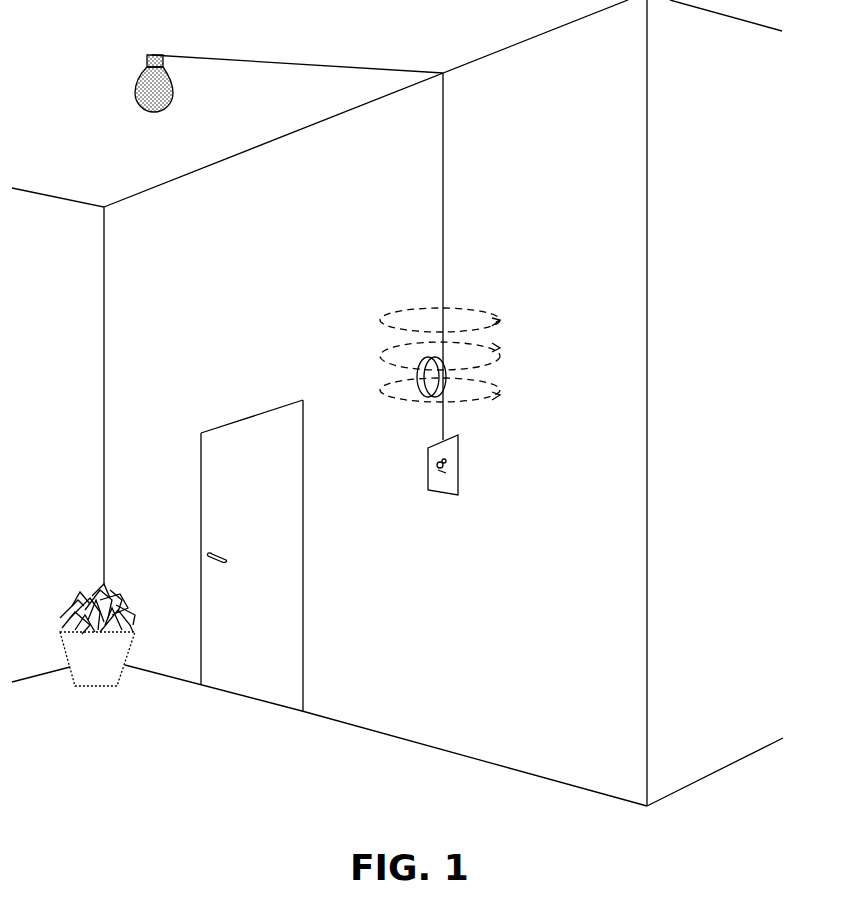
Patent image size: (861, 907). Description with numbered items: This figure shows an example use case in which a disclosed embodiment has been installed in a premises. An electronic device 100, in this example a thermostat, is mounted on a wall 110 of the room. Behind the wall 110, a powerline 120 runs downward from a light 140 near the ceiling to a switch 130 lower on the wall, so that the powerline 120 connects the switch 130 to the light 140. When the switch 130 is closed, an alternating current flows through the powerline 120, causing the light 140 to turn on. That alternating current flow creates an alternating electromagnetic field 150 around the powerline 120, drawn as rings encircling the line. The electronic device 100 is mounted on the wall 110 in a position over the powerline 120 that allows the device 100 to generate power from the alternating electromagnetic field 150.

The electronic device 100 is at (428, 380).
The wall 110 is at (455, 681).
The powerline 120 is at (443, 177).
The switch 130 is at (428, 470).
The light 140 is at (137, 72).
The alternating electromagnetic field 150 is at (385, 318).